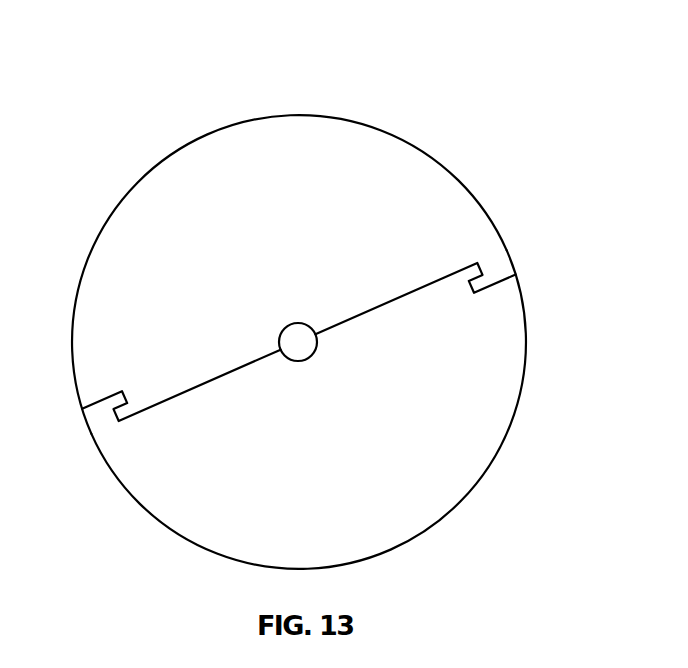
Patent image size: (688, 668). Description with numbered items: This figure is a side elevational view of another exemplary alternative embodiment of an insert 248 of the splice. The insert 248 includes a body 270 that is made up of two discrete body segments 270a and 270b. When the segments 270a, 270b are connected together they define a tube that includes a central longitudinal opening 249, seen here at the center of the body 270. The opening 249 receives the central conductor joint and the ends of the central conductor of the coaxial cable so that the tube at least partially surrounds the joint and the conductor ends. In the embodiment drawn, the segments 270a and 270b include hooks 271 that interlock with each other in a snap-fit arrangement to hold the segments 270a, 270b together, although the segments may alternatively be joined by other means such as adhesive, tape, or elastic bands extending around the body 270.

The insert 248 is at (502, 50).
The central longitudinal opening 249 is at (285, 333).
The body 270 is at (343, 313).
The body segment 270a is at (433, 195).
The body segment 270b is at (480, 407).
The hooks 271 is at (477, 264).